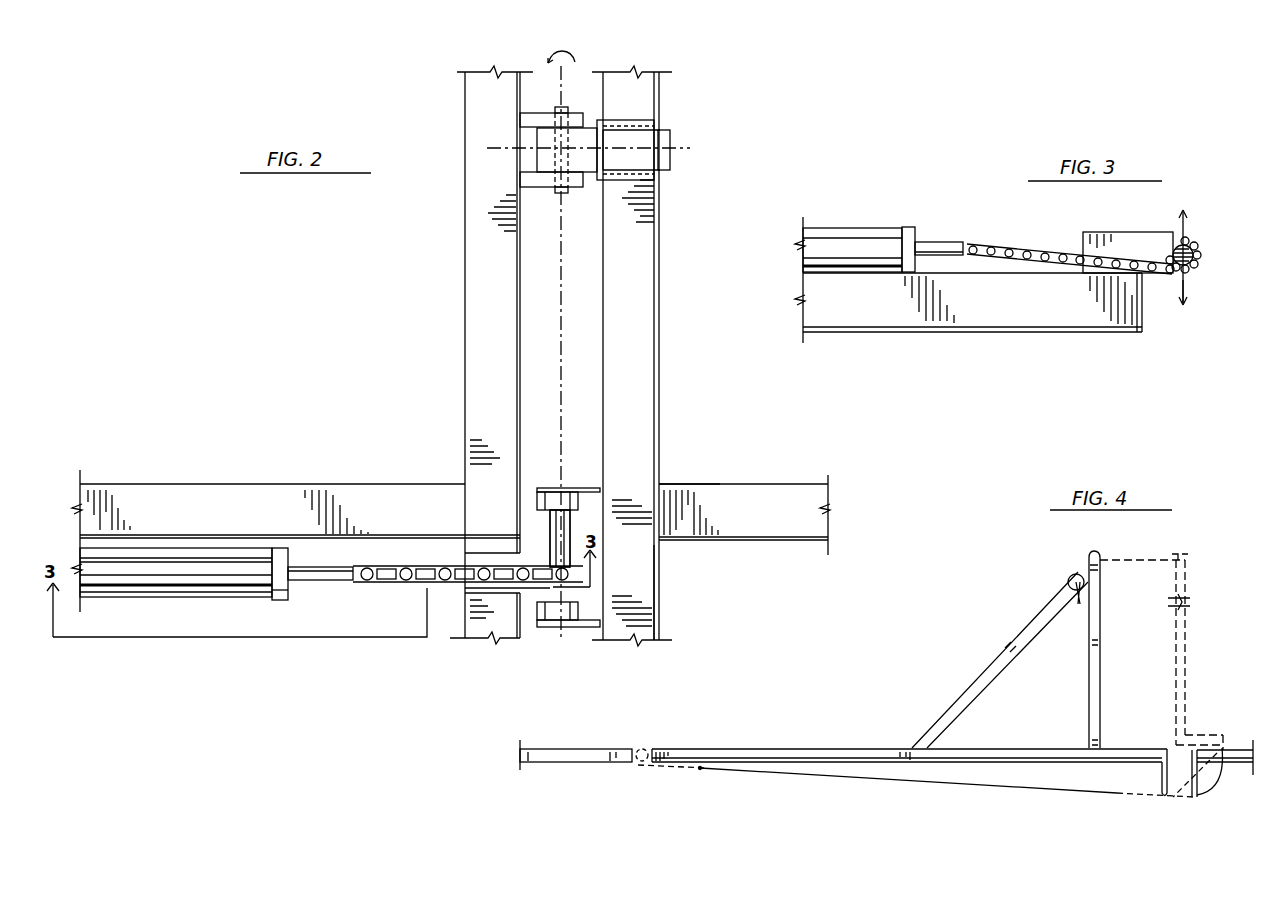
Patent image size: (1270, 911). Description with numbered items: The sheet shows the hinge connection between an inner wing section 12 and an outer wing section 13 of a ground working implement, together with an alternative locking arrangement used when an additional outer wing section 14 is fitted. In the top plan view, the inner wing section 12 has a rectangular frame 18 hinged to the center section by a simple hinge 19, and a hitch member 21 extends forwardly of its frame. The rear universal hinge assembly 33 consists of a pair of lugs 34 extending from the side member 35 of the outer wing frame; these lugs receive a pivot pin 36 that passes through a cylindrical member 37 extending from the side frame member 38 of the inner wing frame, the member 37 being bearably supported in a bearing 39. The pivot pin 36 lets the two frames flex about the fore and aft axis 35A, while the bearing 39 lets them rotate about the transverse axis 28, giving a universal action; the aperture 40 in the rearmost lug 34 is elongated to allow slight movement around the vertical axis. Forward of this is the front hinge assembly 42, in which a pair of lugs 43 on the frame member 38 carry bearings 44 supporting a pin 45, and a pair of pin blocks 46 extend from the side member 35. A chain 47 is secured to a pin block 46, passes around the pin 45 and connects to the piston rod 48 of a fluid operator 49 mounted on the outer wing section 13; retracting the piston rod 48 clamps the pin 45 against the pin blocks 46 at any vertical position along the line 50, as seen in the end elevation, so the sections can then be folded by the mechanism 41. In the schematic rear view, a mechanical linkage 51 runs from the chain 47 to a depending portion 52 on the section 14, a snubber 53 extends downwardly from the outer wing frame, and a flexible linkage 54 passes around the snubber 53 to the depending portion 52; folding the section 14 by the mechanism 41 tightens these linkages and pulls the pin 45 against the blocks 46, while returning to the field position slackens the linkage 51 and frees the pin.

In FIG. 2, the inner wing section 12 is at (796, 526).
In FIG. 4, the inner wing section 12 is at (575, 748).
In FIG. 2, the outer wing section 13 is at (268, 526).
In FIG. 4, the outer wing section 13 is at (871, 742).
In FIG. 4, the additional outer wing section 14 is at (1250, 750).
In FIG. 2, the rectangular frame 18 is at (700, 490).
In FIG. 4, the hinge 19 is at (1178, 754).
In FIG. 2, the hitch member 21 is at (655, 570).
In FIG. 2, the transverse axis 28 is at (686, 153).
In FIG. 2, the rear universal hinge assembly 33 is at (646, 115).
In FIG. 2, the lug 34 is at (538, 176).
In FIG. 2, the side member 35 is at (465, 290).
In FIG. 2, the fore and aft axis 35A is at (564, 47).
In FIG. 2, the pivot pin 36 is at (570, 193).
In FIG. 2, the member 37 is at (540, 150).
In FIG. 2, the side frame member 38 is at (652, 318).
In FIG. 2, the bearing 39 is at (656, 136).
In FIG. 2, the aperture 40 is at (570, 112).
In FIG. 4, the folding mechanism 41 is at (1088, 684).
In FIG. 2, the front hinge assembly 42 is at (568, 452).
In FIG. 3, the front hinge assembly 42 is at (1214, 322).
In FIG. 2, the lug 43 is at (585, 492).
In FIG. 2, the bearing 44 is at (540, 500).
In FIG. 2, the pin 45 is at (552, 540).
In FIG. 3, the pin 45 is at (1196, 240).
In FIG. 4, the pin 45 is at (643, 753).
In FIG. 2, the pin block 46 is at (470, 562).
In FIG. 3, the pin block 46 is at (1100, 236).
In FIG. 2, the chain 47 is at (410, 584).
In FIG. 3, the chain 47 is at (1200, 282).
In FIG. 4, the chain 47 is at (678, 768).
In FIG. 2, the piston rod 48 is at (332, 585).
In FIG. 3, the piston rod 48 is at (966, 212).
In FIG. 2, the fluid operator 49 is at (175, 600).
In FIG. 3, the fluid operator 49 is at (876, 223).
In FIG. 3, the line 50 is at (1188, 288).
In FIG. 4, the mechanical linkage 51 is at (870, 774).
In FIG. 4, the depending portion 52 is at (1197, 780).
In FIG. 4, the snubber 53 is at (1160, 792).
In FIG. 4, the flexible linkage 54 is at (1130, 790).